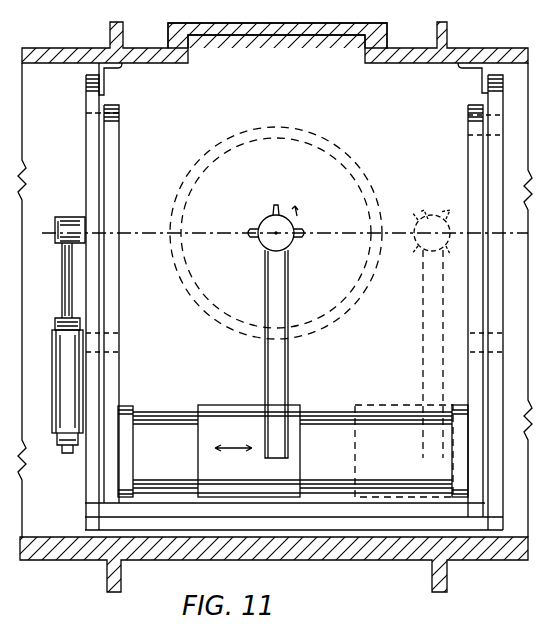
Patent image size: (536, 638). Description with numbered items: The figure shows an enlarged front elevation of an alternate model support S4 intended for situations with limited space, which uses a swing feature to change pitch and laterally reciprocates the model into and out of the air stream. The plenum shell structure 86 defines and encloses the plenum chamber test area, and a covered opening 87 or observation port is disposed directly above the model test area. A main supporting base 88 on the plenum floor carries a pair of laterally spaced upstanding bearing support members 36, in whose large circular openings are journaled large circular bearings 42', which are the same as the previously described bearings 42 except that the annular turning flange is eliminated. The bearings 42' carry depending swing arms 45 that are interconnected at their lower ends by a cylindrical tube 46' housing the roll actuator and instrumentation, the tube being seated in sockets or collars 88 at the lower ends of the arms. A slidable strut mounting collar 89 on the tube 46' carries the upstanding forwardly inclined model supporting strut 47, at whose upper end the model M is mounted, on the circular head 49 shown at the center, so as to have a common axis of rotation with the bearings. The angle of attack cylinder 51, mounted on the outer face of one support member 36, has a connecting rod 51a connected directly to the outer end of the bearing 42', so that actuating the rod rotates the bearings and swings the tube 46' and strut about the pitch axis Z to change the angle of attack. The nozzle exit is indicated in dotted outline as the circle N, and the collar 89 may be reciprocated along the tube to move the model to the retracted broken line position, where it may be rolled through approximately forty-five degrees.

The plenum shell structure 86 is at (64, 50).
The covered opening 87 is at (299, 24).
The circular bearings 42' is at (86, 296).
The bearings 42 is at (491, 296).
The swing arms 45 is at (120, 333).
The bearing support members 36 is at (86, 461).
The axis of rotation Z is at (276, 234).
The circular path of rotation N is at (333, 143).
The rotary head 49 is at (266, 243).
The model M is at (282, 210).
The model supporting strut 47 is at (266, 356).
The model support S4 is at (403, 167).
The cylindrical tube 46' is at (387, 444).
The angle of attack cylinder 51 is at (57, 409).
The connecting rod 51a is at (62, 302).
The main supporting base 88 is at (127, 410).
The strut mounting collar 89 is at (224, 405).